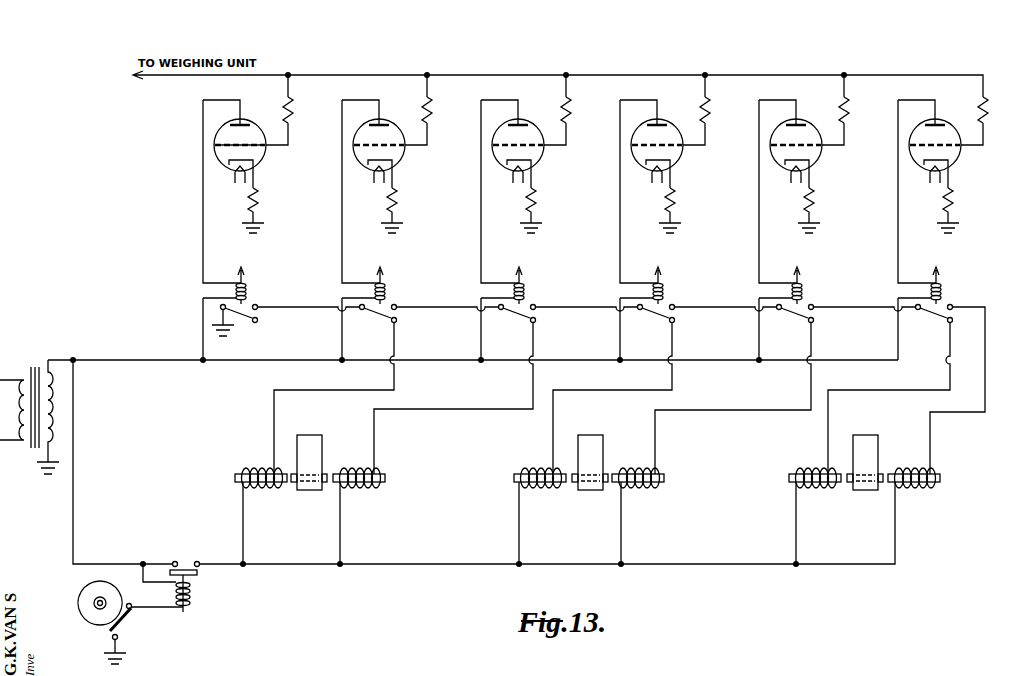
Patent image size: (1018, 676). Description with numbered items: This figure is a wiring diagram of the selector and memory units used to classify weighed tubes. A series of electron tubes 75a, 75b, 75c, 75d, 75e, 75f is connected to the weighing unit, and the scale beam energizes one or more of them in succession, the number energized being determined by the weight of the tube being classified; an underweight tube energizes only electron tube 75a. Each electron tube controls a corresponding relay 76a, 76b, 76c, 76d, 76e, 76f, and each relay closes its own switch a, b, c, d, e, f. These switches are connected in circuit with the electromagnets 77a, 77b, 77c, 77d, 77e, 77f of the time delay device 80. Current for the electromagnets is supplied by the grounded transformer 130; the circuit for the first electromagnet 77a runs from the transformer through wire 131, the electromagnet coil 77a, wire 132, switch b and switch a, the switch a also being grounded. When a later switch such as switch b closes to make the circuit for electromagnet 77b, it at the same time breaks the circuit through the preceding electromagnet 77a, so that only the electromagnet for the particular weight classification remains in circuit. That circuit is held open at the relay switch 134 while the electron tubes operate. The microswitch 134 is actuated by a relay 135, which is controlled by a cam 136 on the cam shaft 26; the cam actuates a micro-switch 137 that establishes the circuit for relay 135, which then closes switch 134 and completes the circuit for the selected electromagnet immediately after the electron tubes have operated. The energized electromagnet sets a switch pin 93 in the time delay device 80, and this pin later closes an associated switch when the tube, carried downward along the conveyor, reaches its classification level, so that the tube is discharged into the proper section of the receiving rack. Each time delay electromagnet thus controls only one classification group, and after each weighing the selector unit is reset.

The electron tube 75a is at (225, 148).
The electron tube 75b is at (364, 148).
The electron tube 75c is at (503, 148).
The electron tube 75d is at (642, 148).
The electron tube 75e is at (781, 148).
The electron tube 75f is at (921, 150).
The relay 76a is at (256, 285).
The relay 76b is at (395, 285).
The relay 76c is at (534, 285).
The relay 76d is at (674, 285).
The relay 76e is at (812, 285).
The relay 76f is at (951, 285).
The electromagnet 77a is at (261, 468).
The electromagnet 77b is at (359, 468).
The electromagnet 77c is at (540, 468).
The electromagnet 77d is at (638, 468).
The electromagnet 77e is at (815, 470).
The electromagnet 77f is at (914, 467).
The time delay device 80 is at (326, 419).
The switch pin 93 is at (296, 483).
The transformer 130 is at (35, 360).
The wire 131 is at (77, 470).
The wire 132 is at (342, 391).
The relay switch 134 is at (185, 568).
The relay 135 is at (193, 600).
The cam 136 is at (82, 586).
The cam shaft 26 is at (93, 605).
The micro-switch 137 is at (120, 624).
The switch a is at (241, 321).
The switch b is at (385, 318).
The switch c is at (523, 318).
The switch d is at (663, 318).
The switch e is at (802, 318).
The switch f is at (940, 318).